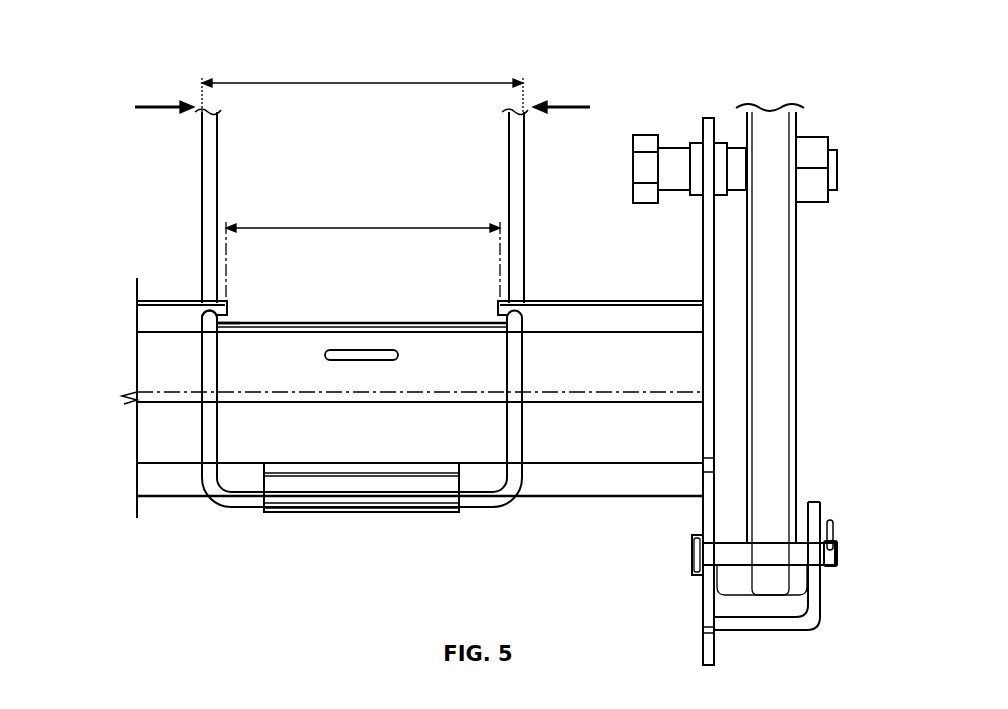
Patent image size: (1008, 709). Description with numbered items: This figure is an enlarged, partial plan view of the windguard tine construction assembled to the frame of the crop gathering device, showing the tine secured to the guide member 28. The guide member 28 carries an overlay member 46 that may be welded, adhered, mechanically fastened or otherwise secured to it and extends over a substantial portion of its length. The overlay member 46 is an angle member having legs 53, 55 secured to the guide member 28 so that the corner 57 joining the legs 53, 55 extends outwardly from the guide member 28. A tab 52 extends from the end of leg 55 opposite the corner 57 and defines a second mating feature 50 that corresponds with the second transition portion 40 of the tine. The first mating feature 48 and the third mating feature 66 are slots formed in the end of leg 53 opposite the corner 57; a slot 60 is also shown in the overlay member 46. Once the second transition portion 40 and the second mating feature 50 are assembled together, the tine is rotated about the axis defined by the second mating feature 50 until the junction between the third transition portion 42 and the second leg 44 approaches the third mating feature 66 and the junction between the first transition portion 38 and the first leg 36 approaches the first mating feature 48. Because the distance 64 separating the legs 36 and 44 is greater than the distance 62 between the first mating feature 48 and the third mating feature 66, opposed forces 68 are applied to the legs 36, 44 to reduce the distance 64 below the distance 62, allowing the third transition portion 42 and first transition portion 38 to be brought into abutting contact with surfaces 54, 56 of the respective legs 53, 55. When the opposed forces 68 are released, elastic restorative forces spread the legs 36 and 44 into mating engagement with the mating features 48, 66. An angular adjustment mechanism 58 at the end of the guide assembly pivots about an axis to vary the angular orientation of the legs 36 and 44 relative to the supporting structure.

The guide member 28 is at (647, 497).
The first leg 36 is at (524, 203).
The first transition portion 38 is at (524, 441).
The second transition portion 40 is at (495, 510).
The third transition portion 42 is at (202, 445).
The second leg 44 is at (202, 160).
The overlay member 46 is at (420, 379).
The first mating feature 48 is at (497, 320).
The second mating feature 50 is at (462, 512).
The tab 52 is at (311, 507).
The leg 53 is at (585, 340).
The surface 54 is at (645, 340).
The leg 55 is at (155, 445).
The surface 56 is at (630, 447).
The corner 57 is at (180, 392).
The angular adjustment mechanism 58 is at (758, 632).
The slot 60 is at (363, 350).
The distance 62 is at (366, 228).
The distance 64 is at (366, 83).
The third mating feature 66 is at (228, 320).
The opposed forces 68 is at (567, 107).